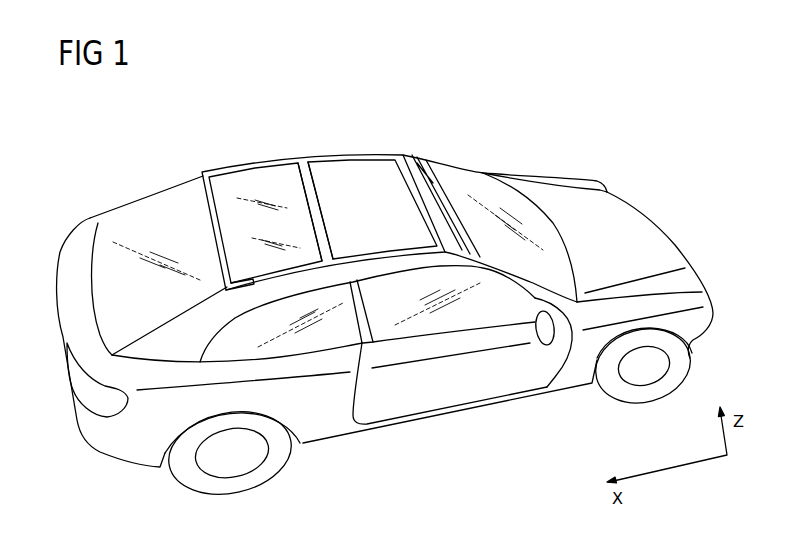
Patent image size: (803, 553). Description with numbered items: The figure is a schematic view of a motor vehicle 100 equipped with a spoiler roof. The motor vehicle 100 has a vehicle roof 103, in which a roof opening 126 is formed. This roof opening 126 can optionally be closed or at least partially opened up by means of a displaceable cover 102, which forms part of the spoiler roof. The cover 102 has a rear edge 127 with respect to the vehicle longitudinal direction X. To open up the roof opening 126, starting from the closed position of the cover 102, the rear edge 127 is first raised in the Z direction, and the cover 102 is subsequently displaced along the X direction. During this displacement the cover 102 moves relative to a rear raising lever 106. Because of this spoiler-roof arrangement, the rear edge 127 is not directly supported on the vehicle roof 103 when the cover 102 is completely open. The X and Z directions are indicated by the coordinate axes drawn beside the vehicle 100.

The motor vehicle 100 is at (490, 98).
The cover 102 is at (276, 192).
The roof opening 126 is at (359, 180).
The vehicle roof 103 is at (403, 153).
The rear raising lever 106 is at (337, 257).
The rear edge 127 is at (198, 191).